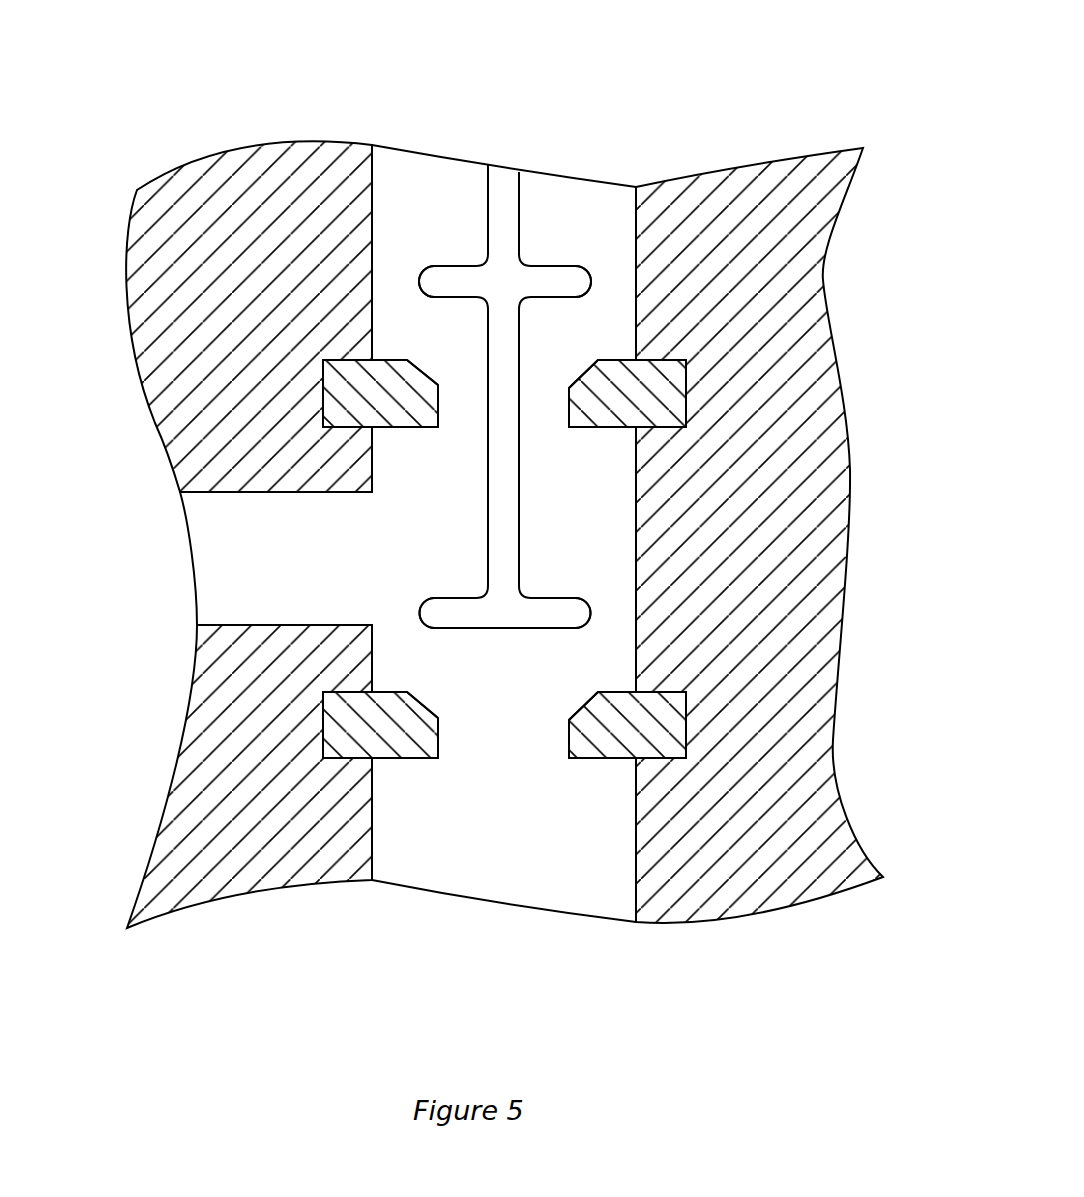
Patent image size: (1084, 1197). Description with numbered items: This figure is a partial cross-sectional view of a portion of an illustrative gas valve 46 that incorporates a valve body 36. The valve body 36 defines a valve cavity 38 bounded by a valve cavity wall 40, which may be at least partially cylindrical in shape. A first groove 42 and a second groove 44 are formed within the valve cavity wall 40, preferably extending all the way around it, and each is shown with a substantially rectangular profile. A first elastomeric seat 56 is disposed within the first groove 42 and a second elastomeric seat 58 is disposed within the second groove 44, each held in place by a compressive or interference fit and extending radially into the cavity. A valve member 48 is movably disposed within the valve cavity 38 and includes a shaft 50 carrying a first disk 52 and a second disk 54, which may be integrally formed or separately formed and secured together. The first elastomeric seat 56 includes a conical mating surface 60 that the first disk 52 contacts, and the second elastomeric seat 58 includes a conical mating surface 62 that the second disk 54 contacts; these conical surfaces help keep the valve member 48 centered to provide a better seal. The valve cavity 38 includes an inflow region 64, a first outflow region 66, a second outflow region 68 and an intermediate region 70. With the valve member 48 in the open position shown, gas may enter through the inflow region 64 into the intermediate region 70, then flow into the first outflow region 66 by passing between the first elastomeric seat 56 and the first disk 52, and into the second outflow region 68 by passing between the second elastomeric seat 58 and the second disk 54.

The valve body 36 is at (183, 210).
The valve cavity 38 is at (523, 862).
The valve cavity wall 40 is at (636, 836).
The first groove 42 is at (667, 402).
The second groove 44 is at (688, 723).
The gas valve 46 is at (325, 73).
The valve member 48 is at (575, 540).
The shaft 50 is at (513, 495).
The first disk 52 is at (517, 280).
The second disk 54 is at (489, 610).
The first elastomeric seat 56 is at (347, 410).
The second elastomeric seat 58 is at (348, 727).
The conical mating surface 60 is at (425, 372).
The conical mating surface 62 is at (425, 703).
The inflow region 64 is at (240, 565).
The first outflow region 66 is at (445, 240).
The second outflow region 68 is at (443, 850).
The intermediate region 70 is at (597, 583).